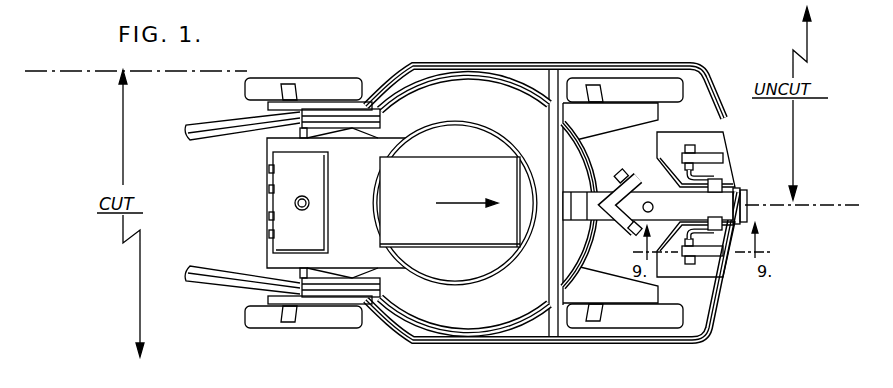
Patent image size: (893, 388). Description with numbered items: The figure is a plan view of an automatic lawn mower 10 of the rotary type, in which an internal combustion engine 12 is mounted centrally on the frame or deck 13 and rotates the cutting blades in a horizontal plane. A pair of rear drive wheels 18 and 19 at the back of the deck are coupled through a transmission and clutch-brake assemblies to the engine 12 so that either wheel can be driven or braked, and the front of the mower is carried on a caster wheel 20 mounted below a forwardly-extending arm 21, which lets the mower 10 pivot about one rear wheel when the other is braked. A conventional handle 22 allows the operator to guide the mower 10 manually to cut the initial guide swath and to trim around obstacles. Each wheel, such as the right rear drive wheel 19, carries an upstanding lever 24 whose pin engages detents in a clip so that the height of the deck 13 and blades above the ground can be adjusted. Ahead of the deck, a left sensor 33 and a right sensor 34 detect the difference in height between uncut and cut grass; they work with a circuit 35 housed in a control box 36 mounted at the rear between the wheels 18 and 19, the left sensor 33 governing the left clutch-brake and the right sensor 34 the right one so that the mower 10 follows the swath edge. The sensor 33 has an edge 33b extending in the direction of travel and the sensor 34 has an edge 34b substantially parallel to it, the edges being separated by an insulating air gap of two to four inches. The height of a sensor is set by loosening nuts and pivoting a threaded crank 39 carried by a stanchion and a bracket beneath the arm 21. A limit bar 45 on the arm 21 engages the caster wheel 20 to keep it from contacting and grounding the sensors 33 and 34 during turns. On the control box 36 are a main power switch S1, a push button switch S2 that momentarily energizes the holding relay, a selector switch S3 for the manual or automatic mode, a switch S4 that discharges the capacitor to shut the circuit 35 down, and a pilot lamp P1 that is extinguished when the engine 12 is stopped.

The automatic lawn mower 10 is at (470, 88).
The internal combustion engine 12 is at (484, 140).
The frame or deck 13 is at (452, 323).
The left rear drive wheel 18 is at (298, 76).
The right rear drive wheel 19 is at (322, 328).
The caster wheel 20 is at (621, 172).
The forwardly-extending arm 21 is at (650, 200).
The handle 22 is at (205, 140).
The upstanding lever 24 is at (290, 324).
The left sensor 33 is at (720, 145).
The edge of left sensor 33b is at (735, 185).
The right sensor 34 is at (700, 279).
The edge of right sensor 34b is at (737, 221).
The circuit 35 is at (680, 348).
The control box 36 is at (318, 222).
The crank 39 is at (715, 181).
The limit bar 45 is at (632, 233).
The pilot lamp P1 is at (305, 196).
The main power switch S1 is at (269, 169).
The push button switch S2 is at (269, 189).
The selector switch S3 is at (269, 234).
The switch S4 is at (269, 216).